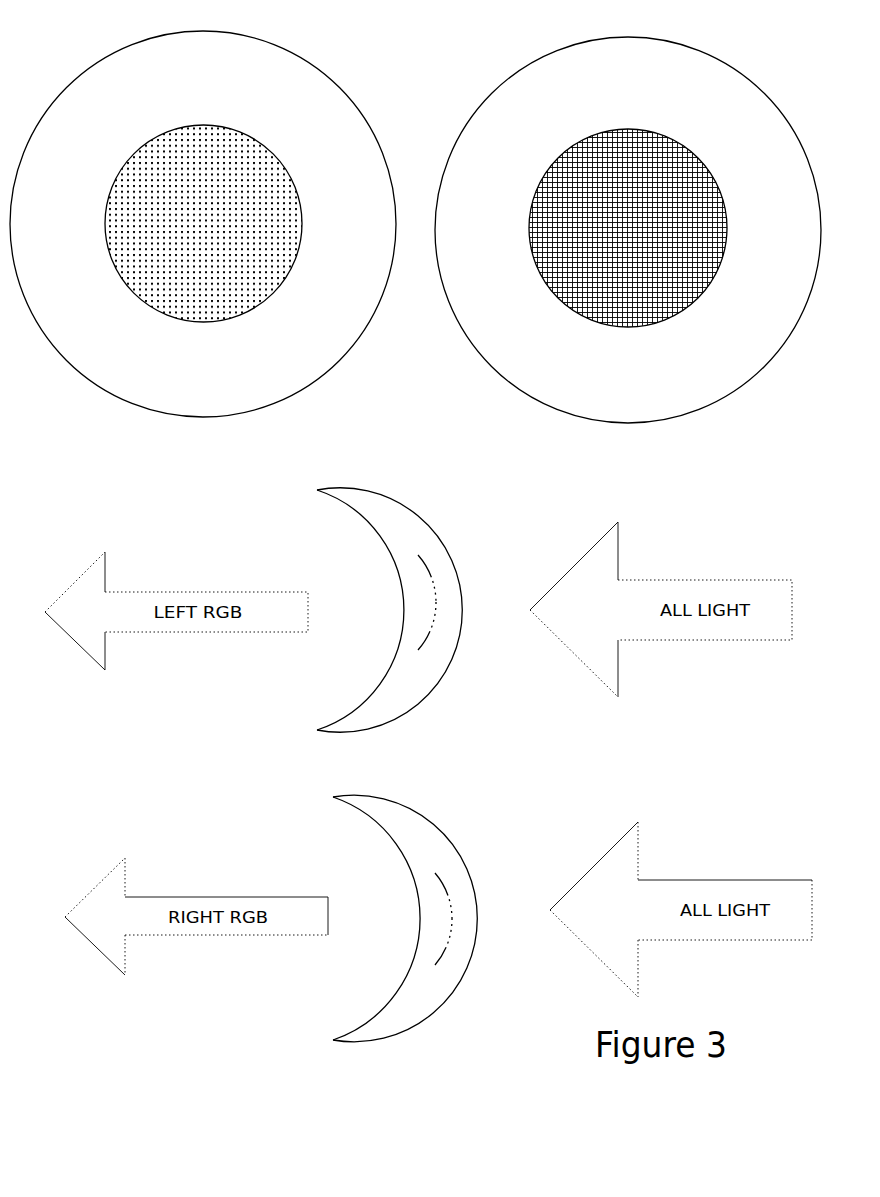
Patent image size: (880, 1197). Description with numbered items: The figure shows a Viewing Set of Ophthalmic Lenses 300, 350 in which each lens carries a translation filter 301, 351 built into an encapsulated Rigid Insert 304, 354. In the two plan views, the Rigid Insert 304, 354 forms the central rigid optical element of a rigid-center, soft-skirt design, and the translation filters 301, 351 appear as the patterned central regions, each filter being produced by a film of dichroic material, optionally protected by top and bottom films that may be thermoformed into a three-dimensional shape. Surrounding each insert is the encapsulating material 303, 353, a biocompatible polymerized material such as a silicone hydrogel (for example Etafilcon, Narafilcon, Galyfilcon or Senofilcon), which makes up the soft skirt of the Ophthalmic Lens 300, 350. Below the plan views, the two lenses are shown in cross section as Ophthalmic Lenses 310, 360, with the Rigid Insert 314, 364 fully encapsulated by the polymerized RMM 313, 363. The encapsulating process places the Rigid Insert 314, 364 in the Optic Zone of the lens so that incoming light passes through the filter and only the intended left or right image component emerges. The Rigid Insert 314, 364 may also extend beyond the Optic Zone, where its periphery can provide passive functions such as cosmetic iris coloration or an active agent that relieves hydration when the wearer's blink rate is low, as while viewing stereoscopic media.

The Ophthalmic Lens 300 is at (203, 249).
The translation filter 301 is at (192, 146).
The encapsulating material 303 is at (302, 345).
The Rigid Insert 304 is at (288, 168).
The Ophthalmic Lens 350 is at (628, 252).
The translation filter 351 is at (630, 150).
The encapsulating material 353 is at (517, 325).
The Rigid Insert 354 is at (693, 303).
The Ophthalmic Lens 310 is at (351, 610).
The polymerized RMM 313 is at (418, 670).
The Rigid Insert 314 is at (437, 587).
The Ophthalmic Lens 360 is at (358, 918).
The polymerized RMM 363 is at (420, 858).
The Rigid Insert 364 is at (435, 967).